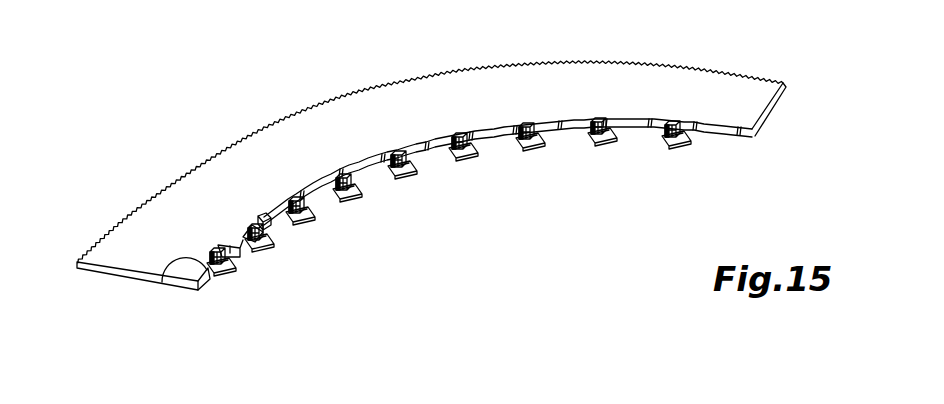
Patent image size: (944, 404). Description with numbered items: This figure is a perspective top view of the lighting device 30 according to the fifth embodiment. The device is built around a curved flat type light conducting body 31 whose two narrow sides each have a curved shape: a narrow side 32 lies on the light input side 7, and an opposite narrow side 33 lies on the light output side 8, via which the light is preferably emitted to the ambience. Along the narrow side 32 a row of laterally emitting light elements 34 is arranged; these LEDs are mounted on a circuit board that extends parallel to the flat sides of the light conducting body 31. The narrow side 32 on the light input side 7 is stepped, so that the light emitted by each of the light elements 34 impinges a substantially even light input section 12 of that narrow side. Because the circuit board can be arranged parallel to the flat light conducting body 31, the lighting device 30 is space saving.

The light input side 7 is at (212, 315).
The light output side 8 is at (60, 281).
The light input section 12 is at (256, 232).
The lighting device 30 is at (187, 123).
The curved flat type light conducting body 31 is at (307, 126).
The narrow side on the light input side 32 is at (434, 156).
The narrow side on the light output side 33 is at (140, 210).
The laterally emitting light elements 34 is at (345, 198).